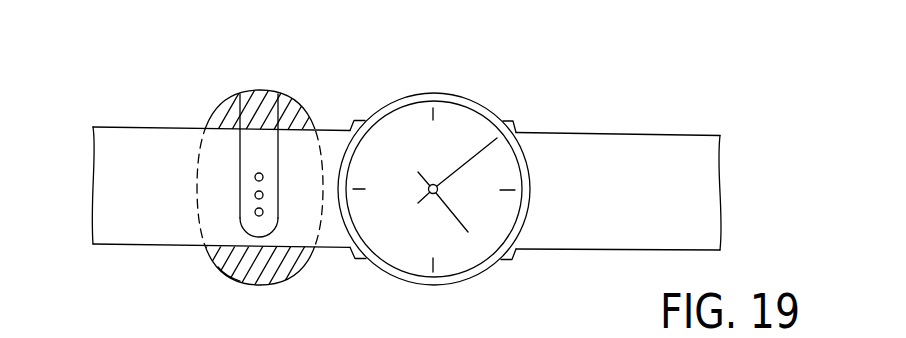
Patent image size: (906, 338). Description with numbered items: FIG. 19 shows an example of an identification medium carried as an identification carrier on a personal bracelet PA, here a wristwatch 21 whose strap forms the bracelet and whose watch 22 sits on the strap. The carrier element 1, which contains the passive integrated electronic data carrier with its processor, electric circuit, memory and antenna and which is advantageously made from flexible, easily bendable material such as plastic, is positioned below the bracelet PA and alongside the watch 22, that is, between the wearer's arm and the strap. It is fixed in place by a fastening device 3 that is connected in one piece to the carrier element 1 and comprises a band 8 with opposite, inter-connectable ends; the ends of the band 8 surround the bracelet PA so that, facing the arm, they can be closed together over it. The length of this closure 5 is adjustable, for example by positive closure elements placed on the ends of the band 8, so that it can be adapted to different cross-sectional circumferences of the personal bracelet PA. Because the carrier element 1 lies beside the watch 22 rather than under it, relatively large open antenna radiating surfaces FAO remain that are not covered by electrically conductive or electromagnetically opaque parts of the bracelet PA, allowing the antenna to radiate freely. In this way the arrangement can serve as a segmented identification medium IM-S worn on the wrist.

The personal bracelet PA is at (113, 142).
The carrier element 1 is at (212, 112).
The open antenna radiating surfaces FAO is at (262, 106).
The identification medium (multi), segmented IM-S is at (218, 267).
The bands 8 is at (253, 147).
The fastening device 3 is at (243, 208).
The closure 5 is at (250, 186).
The wristwatch 21 is at (497, 112).
The watch 22 is at (407, 130).